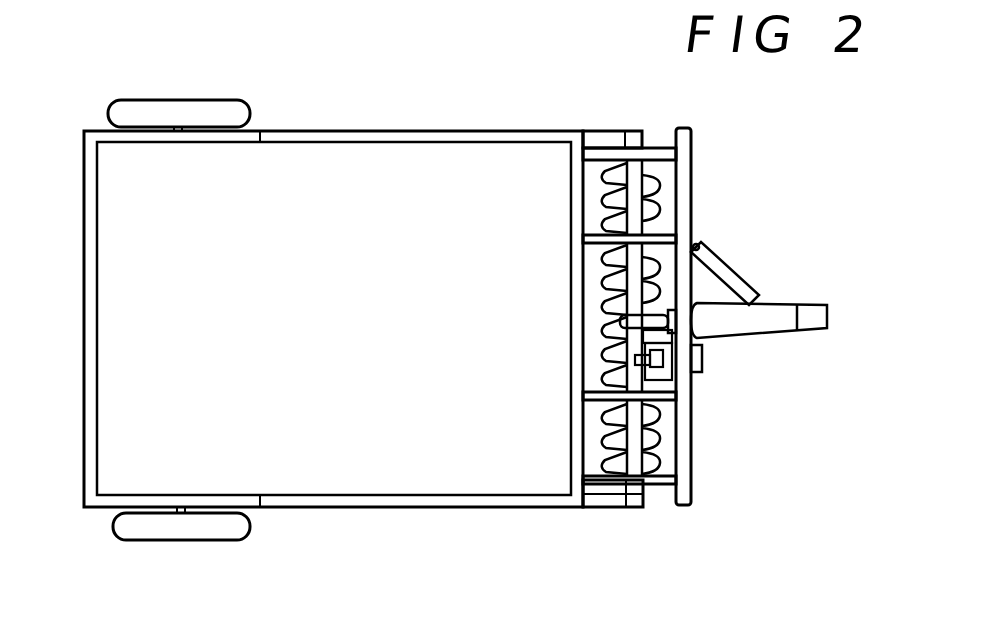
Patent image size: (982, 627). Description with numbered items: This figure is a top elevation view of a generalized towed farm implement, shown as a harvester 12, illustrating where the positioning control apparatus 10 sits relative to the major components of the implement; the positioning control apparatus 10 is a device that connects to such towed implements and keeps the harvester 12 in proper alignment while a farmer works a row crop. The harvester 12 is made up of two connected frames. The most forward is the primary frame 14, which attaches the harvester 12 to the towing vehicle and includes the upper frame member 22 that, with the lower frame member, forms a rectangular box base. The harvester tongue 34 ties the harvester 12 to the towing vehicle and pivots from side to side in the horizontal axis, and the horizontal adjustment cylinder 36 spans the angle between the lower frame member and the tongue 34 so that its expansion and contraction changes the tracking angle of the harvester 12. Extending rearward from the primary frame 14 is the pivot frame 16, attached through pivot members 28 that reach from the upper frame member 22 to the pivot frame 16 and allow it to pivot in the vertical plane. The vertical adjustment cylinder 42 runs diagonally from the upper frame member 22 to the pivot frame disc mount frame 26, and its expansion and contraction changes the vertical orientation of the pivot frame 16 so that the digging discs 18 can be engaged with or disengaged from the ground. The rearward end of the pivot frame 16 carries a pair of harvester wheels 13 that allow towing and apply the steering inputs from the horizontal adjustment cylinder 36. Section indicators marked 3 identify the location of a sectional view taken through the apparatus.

The positioning control apparatus 10 is at (720, 366).
The harvester 12 is at (383, 124).
The harvester wheels 13 is at (173, 99).
The primary frame 14 is at (668, 123).
The pivot frame 16 is at (531, 129).
The digging discs 18 is at (660, 432).
The upper frame member 22 is at (682, 508).
The pivot frame disc mount frame 26 is at (633, 268).
The pivot members 28 is at (615, 483).
The harvester tongue 34 is at (808, 302).
The horizontal adjustment cylinder 36 is at (728, 270).
The vertical adjustment cylinder 42 is at (640, 322).
The section line FIG. 3 is at (631, 212).